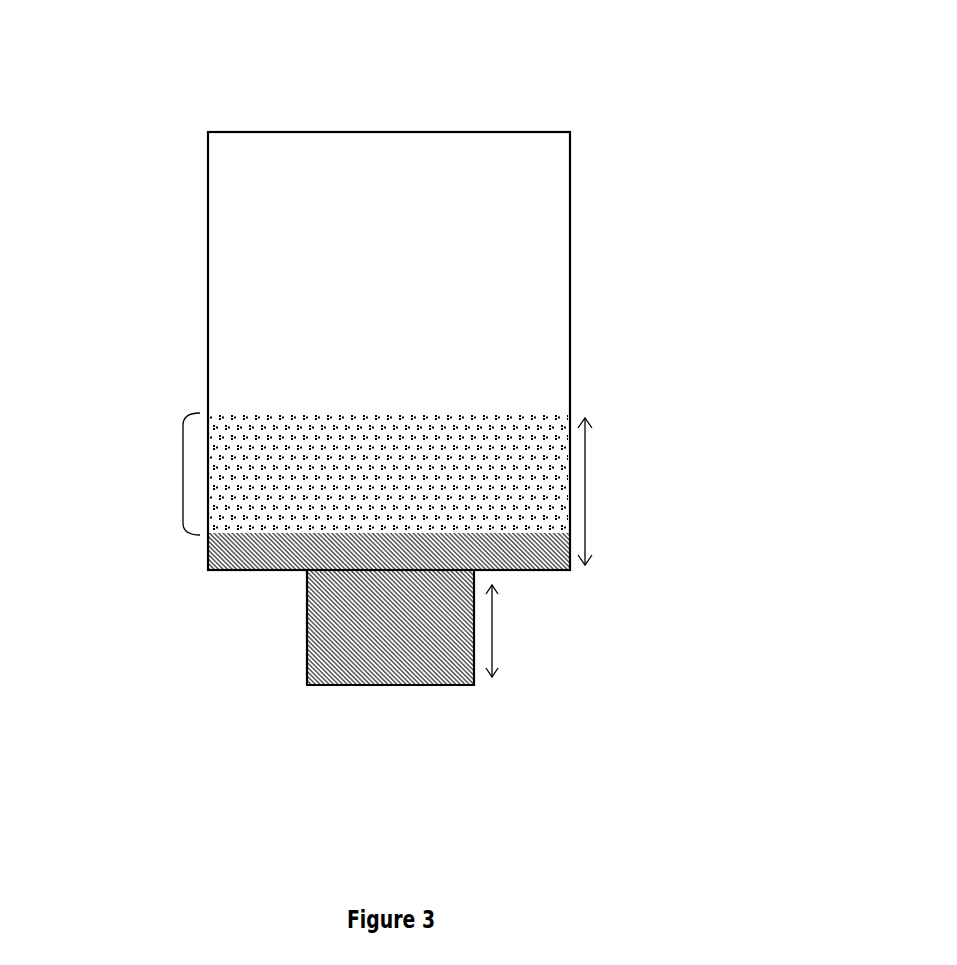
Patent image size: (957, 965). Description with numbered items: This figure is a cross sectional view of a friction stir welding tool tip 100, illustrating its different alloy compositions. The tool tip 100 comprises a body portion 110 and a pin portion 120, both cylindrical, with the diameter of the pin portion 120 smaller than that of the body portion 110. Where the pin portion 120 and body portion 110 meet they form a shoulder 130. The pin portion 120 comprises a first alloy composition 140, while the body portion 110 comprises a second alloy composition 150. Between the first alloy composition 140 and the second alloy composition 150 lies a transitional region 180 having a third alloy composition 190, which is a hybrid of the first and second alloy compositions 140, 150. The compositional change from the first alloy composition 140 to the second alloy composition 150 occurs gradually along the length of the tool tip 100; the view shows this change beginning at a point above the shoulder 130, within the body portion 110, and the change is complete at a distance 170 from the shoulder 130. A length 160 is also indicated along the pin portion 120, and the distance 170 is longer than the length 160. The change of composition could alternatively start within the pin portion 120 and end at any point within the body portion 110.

The friction stir welding tool tip 100 is at (688, 101).
The body portion 110 is at (208, 320).
The pin portion 120 is at (307, 660).
The shoulder 130 is at (208, 570).
The first alloy composition 140 is at (394, 663).
The second alloy composition 150 is at (405, 355).
The length 160 is at (492, 637).
The distance 170 is at (585, 490).
The transitional region 180 is at (183, 476).
The third alloy composition 190 is at (340, 449).